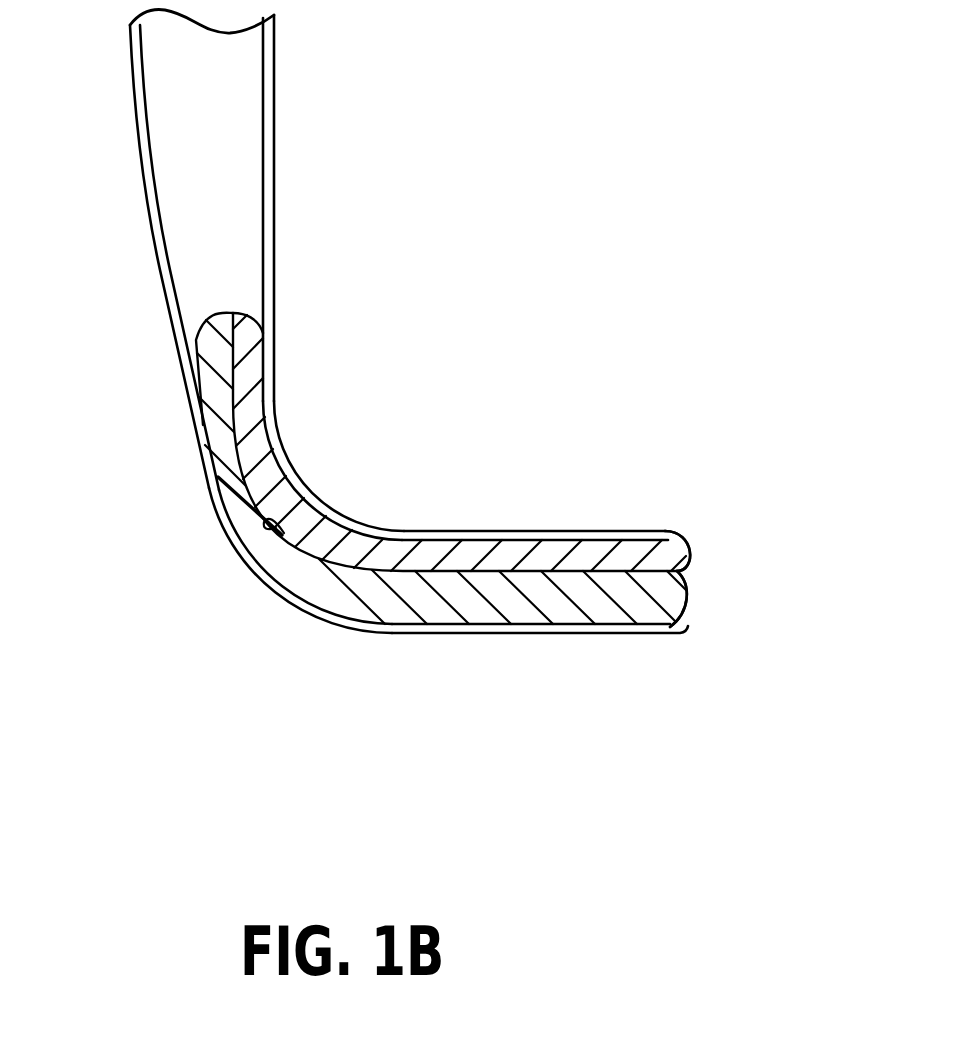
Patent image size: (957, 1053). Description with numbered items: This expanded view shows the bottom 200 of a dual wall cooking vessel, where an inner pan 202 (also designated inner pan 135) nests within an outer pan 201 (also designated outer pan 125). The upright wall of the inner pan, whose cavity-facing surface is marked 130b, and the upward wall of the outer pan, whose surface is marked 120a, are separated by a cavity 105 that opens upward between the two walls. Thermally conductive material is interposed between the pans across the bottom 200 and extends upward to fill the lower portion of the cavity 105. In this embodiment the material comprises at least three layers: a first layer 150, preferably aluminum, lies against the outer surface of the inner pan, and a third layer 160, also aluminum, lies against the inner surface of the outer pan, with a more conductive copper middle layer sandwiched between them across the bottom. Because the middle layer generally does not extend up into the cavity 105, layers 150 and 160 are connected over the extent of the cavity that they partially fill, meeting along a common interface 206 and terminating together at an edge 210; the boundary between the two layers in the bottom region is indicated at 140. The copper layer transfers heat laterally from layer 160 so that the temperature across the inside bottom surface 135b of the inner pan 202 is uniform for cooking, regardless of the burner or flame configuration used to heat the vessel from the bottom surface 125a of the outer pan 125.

The cavity 105 is at (229, 149).
The outer wall first side 120a is at (154, 234).
The outer wall second side 130b is at (275, 222).
The edge 210 is at (220, 313).
The bottom 200 is at (818, 358).
The outer pan 201 is at (343, 507).
The inside bottom surface 135b is at (597, 528).
The inner pan 135 is at (688, 522).
The first layer 150 is at (668, 562).
The third layer 160 is at (650, 582).
The outer pan 125 is at (683, 630).
The bottom surface of the outer pan 125a is at (562, 635).
The interface / center line between layers 140 is at (458, 574).
The inner pan 202 is at (293, 607).
The common interface 206 is at (280, 533).